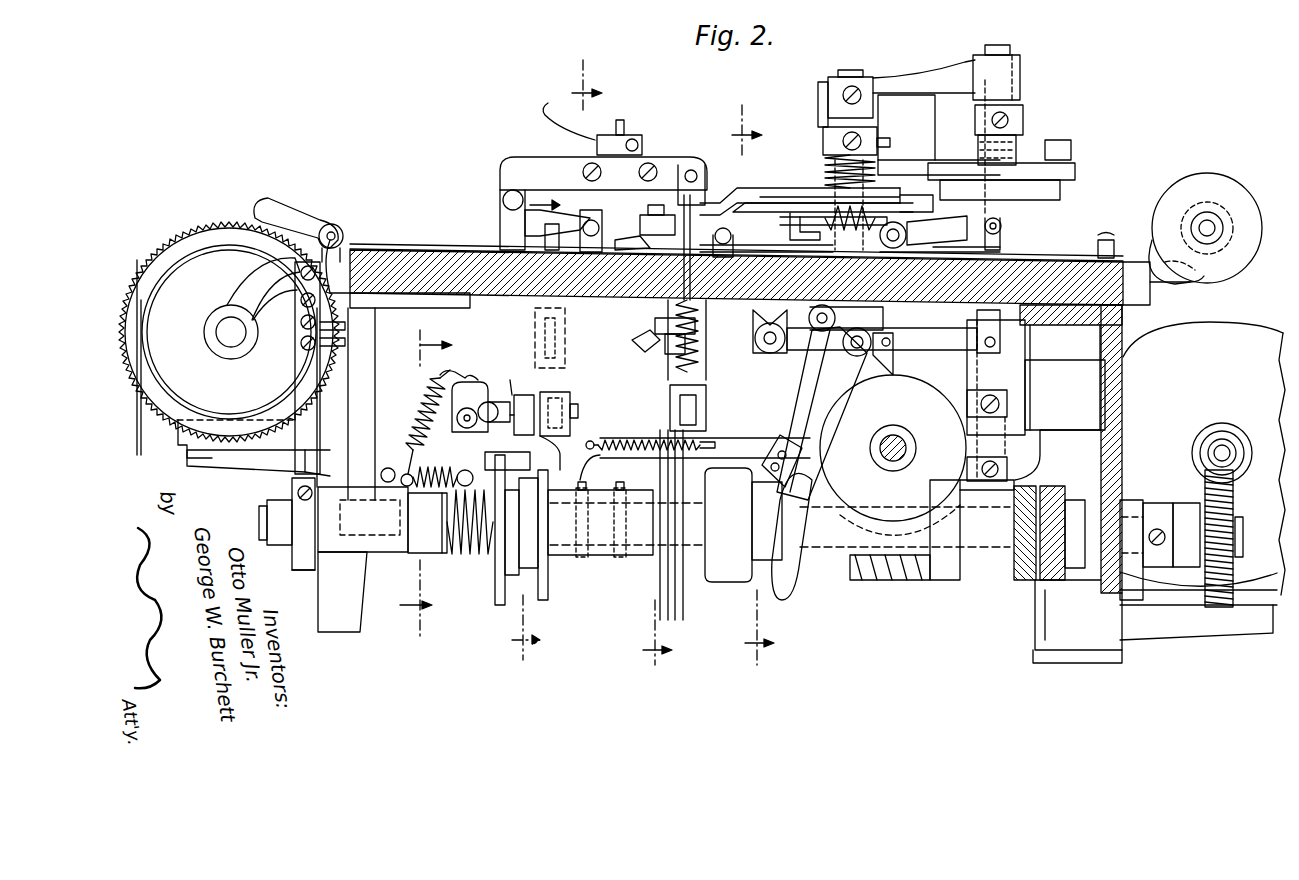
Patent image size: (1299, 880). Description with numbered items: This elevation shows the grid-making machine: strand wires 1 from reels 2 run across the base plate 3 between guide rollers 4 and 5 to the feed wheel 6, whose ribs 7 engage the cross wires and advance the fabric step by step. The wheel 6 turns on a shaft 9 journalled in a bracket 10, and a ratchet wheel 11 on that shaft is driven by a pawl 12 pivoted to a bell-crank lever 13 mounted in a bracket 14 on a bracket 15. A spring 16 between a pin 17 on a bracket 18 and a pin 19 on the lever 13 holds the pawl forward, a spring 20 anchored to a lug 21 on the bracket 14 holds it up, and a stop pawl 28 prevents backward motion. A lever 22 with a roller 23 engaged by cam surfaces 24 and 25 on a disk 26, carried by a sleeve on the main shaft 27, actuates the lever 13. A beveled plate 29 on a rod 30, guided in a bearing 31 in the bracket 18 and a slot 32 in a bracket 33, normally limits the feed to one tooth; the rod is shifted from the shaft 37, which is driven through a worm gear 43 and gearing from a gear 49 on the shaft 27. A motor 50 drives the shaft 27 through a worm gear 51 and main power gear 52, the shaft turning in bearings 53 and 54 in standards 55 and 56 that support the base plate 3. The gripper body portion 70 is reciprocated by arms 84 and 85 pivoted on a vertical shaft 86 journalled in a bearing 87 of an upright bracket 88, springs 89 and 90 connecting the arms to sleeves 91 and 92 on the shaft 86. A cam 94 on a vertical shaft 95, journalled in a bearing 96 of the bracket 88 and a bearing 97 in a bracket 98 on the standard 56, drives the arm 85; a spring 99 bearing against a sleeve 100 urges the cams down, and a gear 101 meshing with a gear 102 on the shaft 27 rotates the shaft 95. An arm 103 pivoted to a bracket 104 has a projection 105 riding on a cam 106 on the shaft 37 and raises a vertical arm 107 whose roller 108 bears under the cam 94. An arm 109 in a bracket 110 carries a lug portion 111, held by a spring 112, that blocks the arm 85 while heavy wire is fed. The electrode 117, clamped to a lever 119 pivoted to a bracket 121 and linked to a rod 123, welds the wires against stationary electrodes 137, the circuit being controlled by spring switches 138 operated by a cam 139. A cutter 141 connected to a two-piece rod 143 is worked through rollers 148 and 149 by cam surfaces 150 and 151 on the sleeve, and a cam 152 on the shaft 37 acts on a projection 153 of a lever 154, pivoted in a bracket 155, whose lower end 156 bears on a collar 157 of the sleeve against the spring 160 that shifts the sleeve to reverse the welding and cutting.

The strand wires 1 is at (1058, 258).
The reels 2 is at (1226, 272).
The base plate 3 is at (402, 258).
The guide roller 4 is at (1105, 236).
The guide roller 5 is at (622, 437).
The feed wheel 6 is at (229, 332).
The ribs 7 is at (214, 232).
The shaft 9 is at (229, 340).
The bracket 10 is at (247, 285).
The ratchet wheel 11 is at (188, 238).
The pawl 12 is at (222, 476).
The bell-crank lever 13 is at (490, 402).
The bracket 14 is at (474, 382).
The bracket 15 is at (524, 392).
The spring 16 is at (406, 486).
The pin 17 is at (384, 482).
The bracket 18 is at (361, 404).
The pin 19 is at (460, 556).
The spring 20 is at (420, 410).
The projecting lug 21 is at (448, 374).
The lever 22 is at (566, 394).
The roller 23 is at (562, 456).
The cam surface 24 is at (498, 464).
The cam surface 25 is at (514, 576).
The disk 26 is at (497, 596).
The main power shaft 27 is at (259, 520).
The stop pawl 28 is at (285, 212).
The beveled plate 29 is at (182, 452).
The long rod 30 is at (734, 452).
The bearing 31 is at (340, 420).
The slot 32 is at (706, 412).
The bracket 33 is at (708, 375).
The shaft 37 is at (900, 436).
The worm gear 43 is at (862, 580).
The gear 49 is at (1040, 590).
The motor 50 is at (1202, 481).
The worm gear 51 is at (1192, 456).
The main power gear 52 is at (1234, 500).
The bearing 53 is at (1140, 573).
The bearing 54 is at (392, 552).
The end vertical standard 55 is at (360, 612).
The end vertical standard 56 is at (1077, 484).
The main body portion 70 is at (634, 222).
The arm 84 is at (742, 188).
The arm 85 is at (790, 213).
The vertical shaft 86 is at (858, 58).
The bearing 87 is at (836, 100).
The upright bracket 88 is at (939, 135).
The spring 89 is at (826, 162).
The spring 90 is at (790, 232).
The sleeve 91 is at (823, 138).
The sleeve 92 is at (766, 240).
The cam 94 is at (1076, 200).
The vertical shaft 95 is at (996, 45).
The bearing 96 is at (1020, 82).
The bearing 97 is at (1012, 408).
The bracket 98 is at (1056, 434).
The spring 99 is at (1016, 150).
The sleeve 100 is at (1023, 118).
The gear 101 is at (1020, 470).
The gear 102 is at (1012, 570).
The arm 103 is at (934, 345).
The bracket 104 is at (756, 330).
The projection 105 is at (902, 352).
The cam 106 is at (893, 448).
The vertical arm 107 is at (1036, 326).
The roller 108 is at (1002, 224).
The arm 109 is at (939, 230).
The bracket 110 is at (940, 250).
The lug portion 111 is at (833, 207).
The spring 112 is at (908, 232).
The electrode 117 is at (620, 120).
The lever 119 is at (506, 165).
The bracket 121 is at (500, 198).
The rod 123 is at (692, 168).
The lower stationary electrodes 137 is at (648, 338).
The spring switches 138 is at (297, 493).
The cam 139 is at (304, 572).
The pivoted cutter 141 is at (563, 224).
The two-piece rod 143 is at (536, 322).
The roller 148 is at (610, 452).
The roller 149 is at (587, 470).
The cam surface 150 is at (527, 523).
The cam surface 151 is at (546, 596).
The cam 152 is at (944, 580).
The projection 153 is at (790, 440).
The lever 154 is at (822, 400).
The bracket 155 is at (846, 330).
The lower end 156 is at (788, 582).
The collar 157 is at (728, 576).
The spring 160 is at (486, 556).